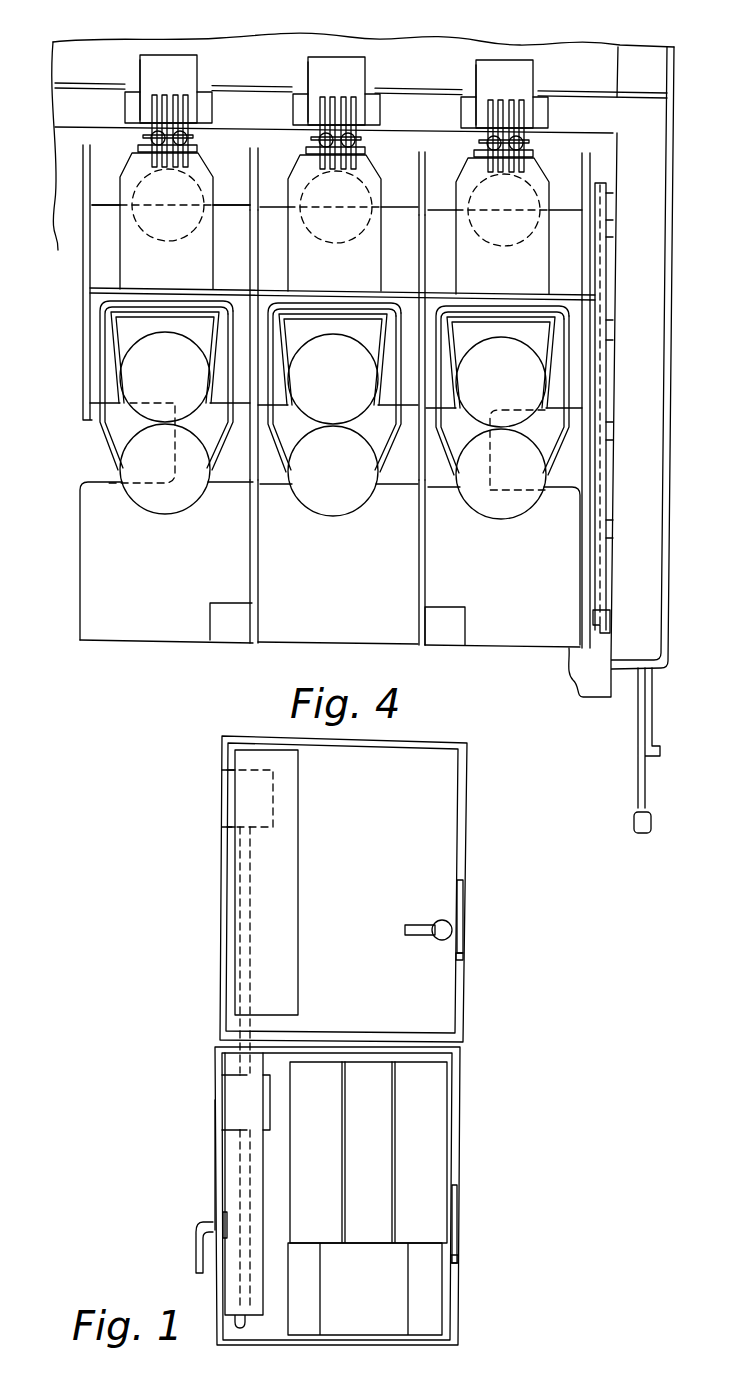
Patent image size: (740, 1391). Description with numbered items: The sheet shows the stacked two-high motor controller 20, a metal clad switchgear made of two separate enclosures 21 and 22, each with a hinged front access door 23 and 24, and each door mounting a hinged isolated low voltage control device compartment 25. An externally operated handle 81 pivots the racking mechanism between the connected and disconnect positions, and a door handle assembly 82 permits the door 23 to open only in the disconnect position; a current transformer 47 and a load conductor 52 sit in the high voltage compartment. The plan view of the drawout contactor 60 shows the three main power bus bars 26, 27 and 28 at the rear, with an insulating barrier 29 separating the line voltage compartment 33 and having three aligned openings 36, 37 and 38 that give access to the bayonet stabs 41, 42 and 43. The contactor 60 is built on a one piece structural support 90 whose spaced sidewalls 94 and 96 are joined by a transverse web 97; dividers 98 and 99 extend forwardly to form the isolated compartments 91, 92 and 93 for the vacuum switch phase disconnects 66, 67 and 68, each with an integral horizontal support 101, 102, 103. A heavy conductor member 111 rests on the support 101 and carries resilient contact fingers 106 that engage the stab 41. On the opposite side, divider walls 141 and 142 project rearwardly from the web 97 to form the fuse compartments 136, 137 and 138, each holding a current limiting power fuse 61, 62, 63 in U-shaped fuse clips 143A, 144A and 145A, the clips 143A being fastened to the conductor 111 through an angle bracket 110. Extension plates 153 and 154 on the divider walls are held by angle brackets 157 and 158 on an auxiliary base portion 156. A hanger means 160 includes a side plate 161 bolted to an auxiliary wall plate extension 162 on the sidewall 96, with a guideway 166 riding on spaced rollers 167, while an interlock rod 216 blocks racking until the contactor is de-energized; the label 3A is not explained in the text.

In FIG. 4, the side wall 3A is at (57, 143).
In FIG. 1, the motor controller 20 is at (478, 1034).
In FIG. 4, the enclosure 21 is at (676, 118).
In FIG. 1, the enclosure 21 is at (460, 1128).
In FIG. 1, the enclosure 22 is at (467, 819).
In FIG. 1, the access door 23 is at (215, 1165).
In FIG. 1, the access door 24 is at (442, 859).
In FIG. 1, the low voltage control device compartment 25 is at (232, 1188).
In FIG. 4, the main power bus bar 26 is at (187, 56).
In FIG. 4, the main power bus bar 27 is at (357, 82).
In FIG. 4, the main power bus bar 28 is at (528, 90).
In FIG. 4, the insulating barrier 29 is at (410, 90).
In FIG. 4, the line voltage compartment 33 is at (264, 48).
In FIG. 4, the opening 36 is at (141, 86).
In FIG. 4, the opening 37 is at (290, 92).
In FIG. 4, the opening 38 is at (458, 95).
In FIG. 4, the bayonet stab 41 is at (147, 110).
In FIG. 4, the bayonet stab 42 is at (316, 109).
In FIG. 4, the bayonet stab 43 is at (485, 114).
In FIG. 1, the current transformer 47 is at (270, 1093).
In FIG. 1, the load conductor 52 is at (235, 1178).
In FIG. 4, the drawout contactor 60 is at (78, 268).
In FIG. 1, the drawout contactor 60 is at (383, 1186).
In FIG. 4, the current limiting power fuse 61 is at (192, 418).
In FIG. 4, the current limiting power fuse 62 is at (343, 466).
In FIG. 4, the current limiting power fuse 63 is at (507, 464).
In FIG. 4, the vacuum switch phase disconnect 66 is at (147, 233).
In FIG. 4, the vacuum switch phase disconnect 67 is at (334, 224).
In FIG. 4, the vacuum switch phase disconnect 68 is at (502, 228).
In FIG. 4, the handle 81 is at (646, 810).
In FIG. 1, the handle 81 is at (459, 1256).
In FIG. 1, the door handle assembly 82 is at (196, 1248).
In FIG. 4, the structural support 90 is at (84, 291).
In FIG. 4, the compartment 91 is at (107, 222).
In FIG. 4, the compartment 92 is at (264, 193).
In FIG. 4, the compartment 93 is at (433, 186).
In FIG. 4, the sidewall 94 is at (85, 340).
In FIG. 4, the sidewall 96 is at (583, 354).
In FIG. 4, the transverse web 97 is at (350, 292).
In FIG. 4, the divider 98 is at (253, 254).
In FIG. 4, the divider 99 is at (427, 262).
In FIG. 4, the horizontal support 101 is at (222, 207).
In FIG. 4, the horizontal support 102 is at (402, 180).
In FIG. 4, the horizontal support 103 is at (568, 185).
In FIG. 4, the contact fingers 106 is at (150, 134).
In FIG. 4, the angle bracket 110 is at (163, 313).
In FIG. 4, the conductor member 111 is at (131, 158).
In FIG. 4, the vertical compartment 136 is at (153, 598).
In FIG. 4, the vertical compartment 137 is at (338, 637).
In FIG. 4, the vertical compartment 138 is at (502, 637).
In FIG. 4, the divider wall 141 is at (238, 430).
In FIG. 4, the divider wall 142 is at (398, 409).
In FIG. 4, the fuse clips 143A is at (110, 452).
In FIG. 4, the fuse clips 144A is at (332, 420).
In FIG. 4, the fuse clips 145A is at (499, 422).
In FIG. 4, the extension plate 153 is at (252, 545).
In FIG. 4, the extension plate 154 is at (420, 557).
In FIG. 4, the auxiliary base portion 156 is at (80, 568).
In FIG. 4, the angle bracket 157 is at (222, 604).
In FIG. 4, the angle bracket 158 is at (449, 607).
In FIG. 4, the hanger means 160 is at (608, 487).
In FIG. 4, the support side plate 161 is at (606, 186).
In FIG. 4, the auxiliary wall plate extension 162 is at (592, 166).
In FIG. 4, the guideway 166 is at (598, 284).
In FIG. 4, the roller member 167 is at (600, 635).
In FIG. 4, the rod 216 is at (650, 712).
In FIG. 1, the rod 216 is at (460, 1230).